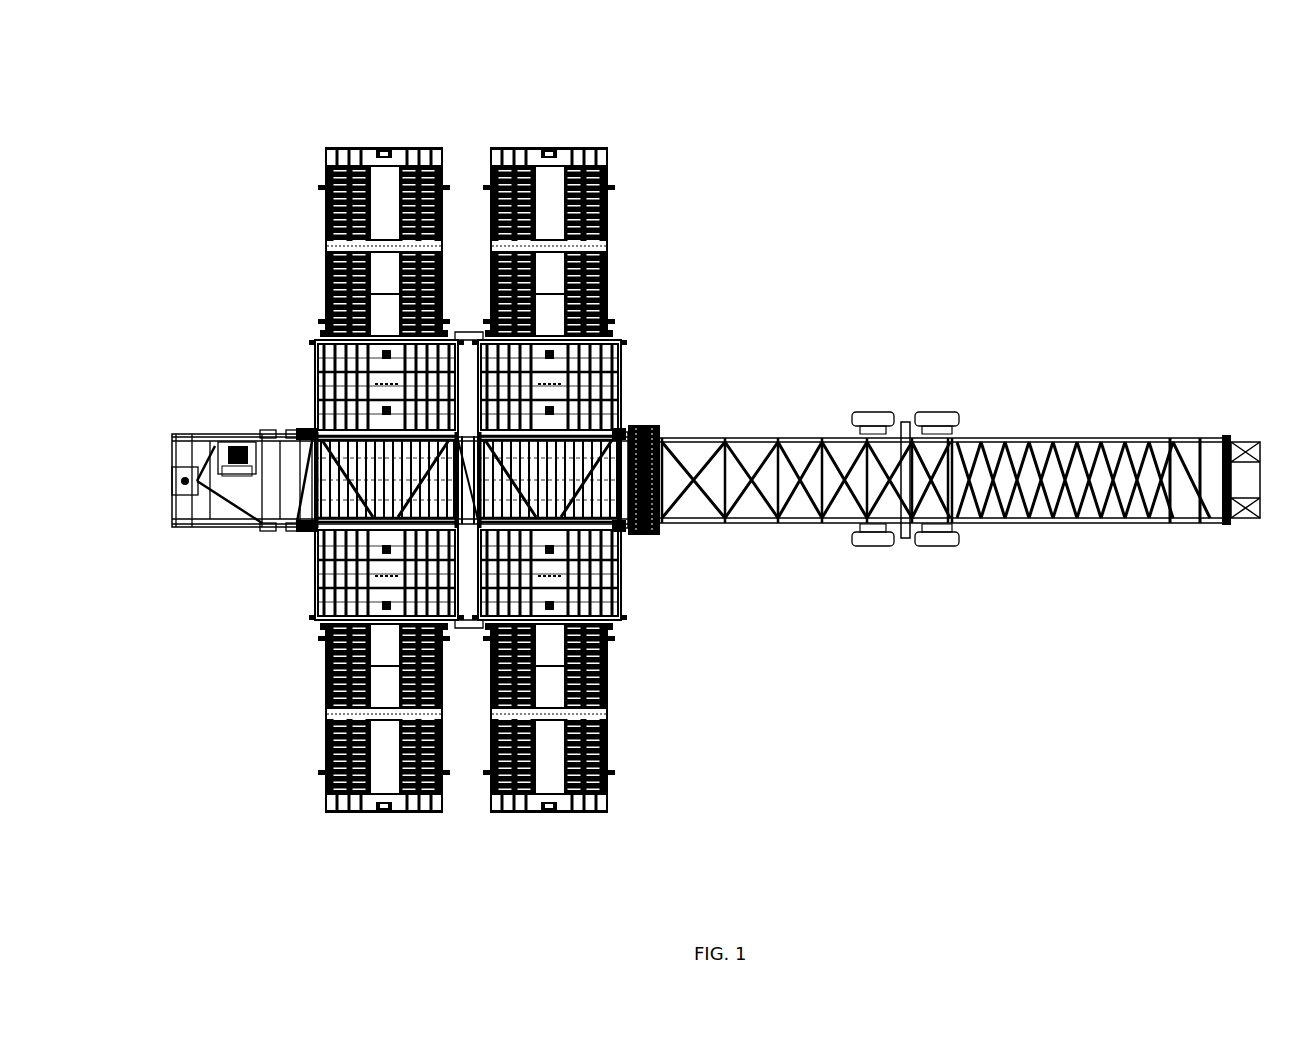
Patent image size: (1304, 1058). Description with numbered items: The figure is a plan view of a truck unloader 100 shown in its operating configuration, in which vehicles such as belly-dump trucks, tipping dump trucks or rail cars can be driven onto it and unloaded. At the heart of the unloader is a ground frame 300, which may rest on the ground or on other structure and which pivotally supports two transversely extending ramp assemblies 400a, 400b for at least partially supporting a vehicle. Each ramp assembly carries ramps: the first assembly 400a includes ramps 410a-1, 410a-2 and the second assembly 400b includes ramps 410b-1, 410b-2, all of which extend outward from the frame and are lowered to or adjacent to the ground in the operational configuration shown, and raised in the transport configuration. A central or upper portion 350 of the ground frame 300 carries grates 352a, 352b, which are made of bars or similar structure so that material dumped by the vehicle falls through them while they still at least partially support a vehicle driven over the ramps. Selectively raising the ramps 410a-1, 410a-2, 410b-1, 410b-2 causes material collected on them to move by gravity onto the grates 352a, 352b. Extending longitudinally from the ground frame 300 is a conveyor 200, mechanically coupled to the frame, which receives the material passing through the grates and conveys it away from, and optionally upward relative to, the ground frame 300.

The truck unloader 100 is at (1121, 123).
The conveyor 200 is at (858, 706).
The ground frame 300 is at (176, 578).
The portion of the ground frame 350 is at (626, 535).
The grate 352a is at (292, 432).
The grate 352b is at (622, 430).
The ramp assembly 400a is at (386, 835).
The ramp assembly 400b is at (548, 856).
The ramp 410a-1 is at (326, 305).
The ramp 410a-2 is at (326, 680).
The ramp 410b-1 is at (608, 290).
The ramp 410b-2 is at (608, 688).